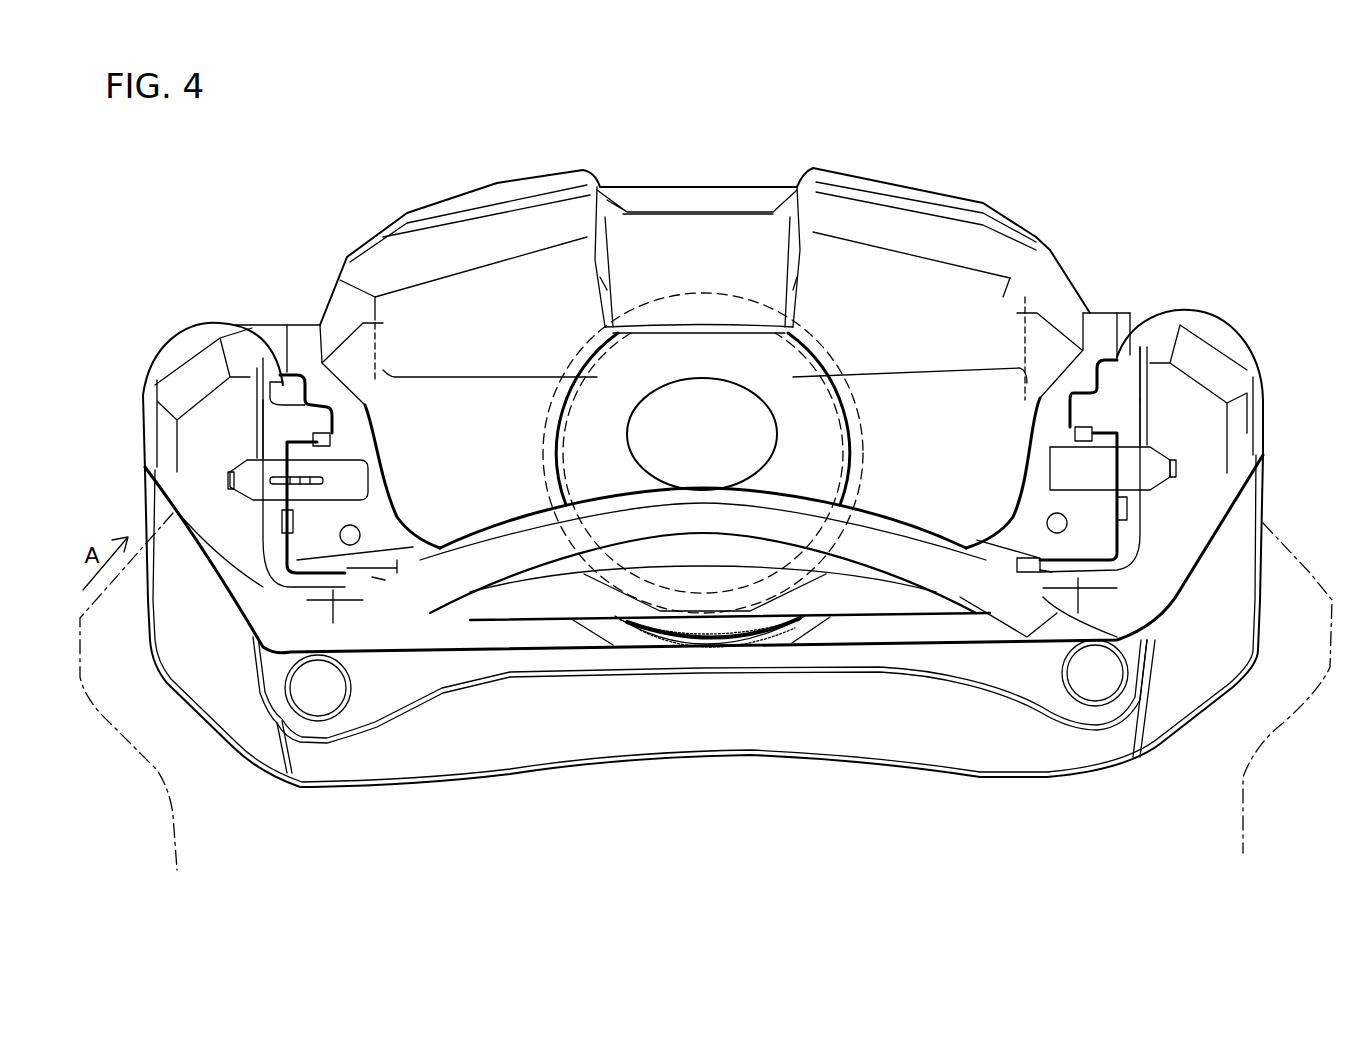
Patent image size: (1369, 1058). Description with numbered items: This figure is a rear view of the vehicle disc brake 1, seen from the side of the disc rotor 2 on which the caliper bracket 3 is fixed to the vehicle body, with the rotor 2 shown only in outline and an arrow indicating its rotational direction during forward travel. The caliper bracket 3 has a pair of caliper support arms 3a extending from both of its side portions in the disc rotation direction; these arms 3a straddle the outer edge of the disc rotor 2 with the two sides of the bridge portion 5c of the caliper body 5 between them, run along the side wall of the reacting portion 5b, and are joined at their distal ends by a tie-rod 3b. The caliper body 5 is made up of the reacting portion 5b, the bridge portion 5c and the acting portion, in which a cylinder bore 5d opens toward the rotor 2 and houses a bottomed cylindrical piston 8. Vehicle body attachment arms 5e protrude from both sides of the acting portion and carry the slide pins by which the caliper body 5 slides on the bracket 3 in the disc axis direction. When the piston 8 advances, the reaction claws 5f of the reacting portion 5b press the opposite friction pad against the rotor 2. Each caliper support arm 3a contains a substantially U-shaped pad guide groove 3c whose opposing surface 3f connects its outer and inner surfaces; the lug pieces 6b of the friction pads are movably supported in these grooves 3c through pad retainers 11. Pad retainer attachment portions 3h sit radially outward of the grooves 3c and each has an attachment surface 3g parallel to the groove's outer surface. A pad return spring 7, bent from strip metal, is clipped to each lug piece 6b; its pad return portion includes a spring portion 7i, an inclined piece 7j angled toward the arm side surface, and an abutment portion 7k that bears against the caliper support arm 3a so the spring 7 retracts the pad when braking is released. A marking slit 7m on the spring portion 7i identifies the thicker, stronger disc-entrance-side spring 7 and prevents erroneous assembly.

The vehicle disc brake 1 is at (686, 114).
The disc rotor 2 is at (1310, 570).
The caliper bracket 3 is at (703, 557).
The caliper support arm 3a is at (193, 365).
The tie-rod 3b is at (698, 507).
The pad guide groove 3c is at (303, 535).
The opposing surface 3f is at (300, 580).
The attachment surface 3g is at (330, 403).
The pad retainer attachment portion 3h is at (330, 427).
The caliper body 5 is at (695, 372).
The reacting portion 5b is at (1003, 297).
The bridge portion 5c is at (510, 185).
The cylinder bore 5d is at (680, 300).
The vehicle body attachment arm 5e is at (273, 332).
The reaction claw 5f is at (480, 517).
The lug piece 6b is at (374, 585).
The pad return spring 7 is at (703, 446).
The spring portion 7i is at (343, 480).
The inclined piece 7j is at (247, 460).
The abutment portion 7k is at (232, 472).
The marking slit 7m is at (310, 477).
The piston 8 is at (722, 300).
The pad retainer 11 is at (293, 368).